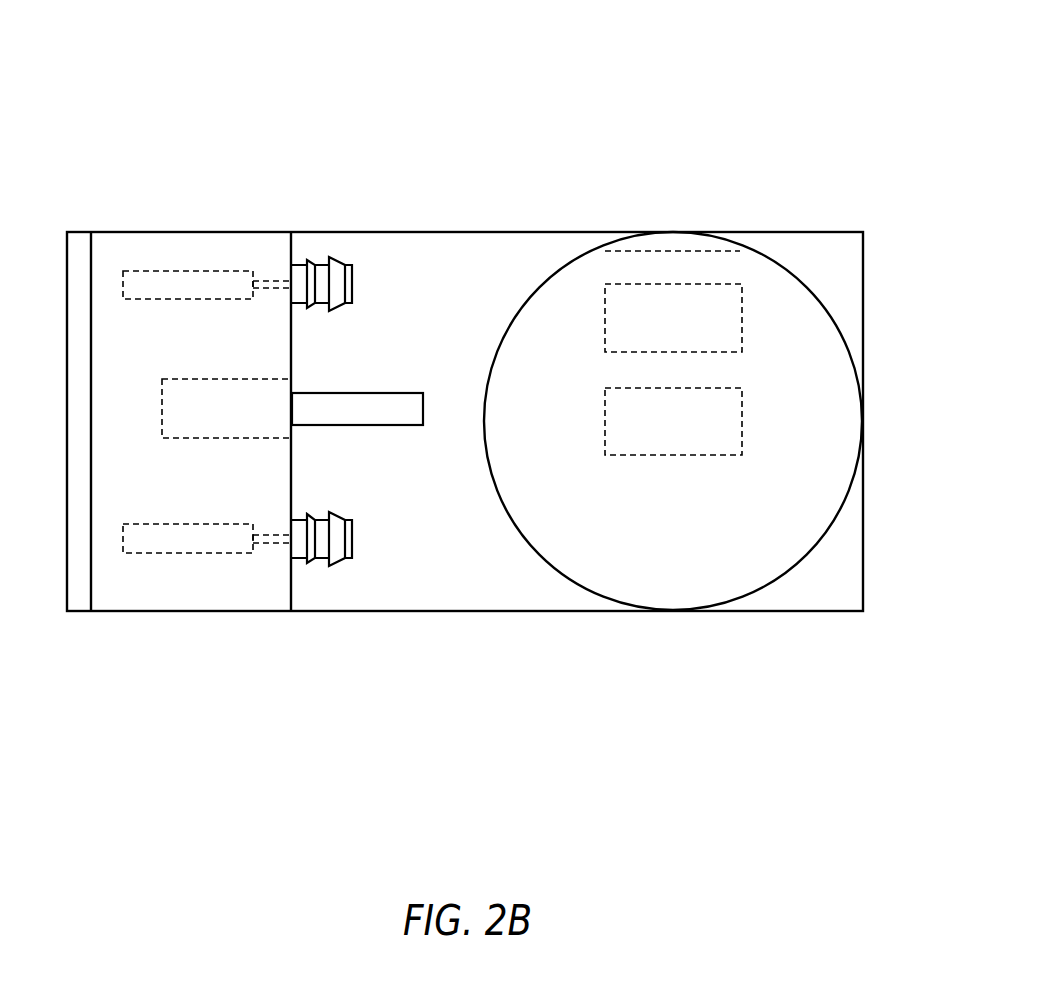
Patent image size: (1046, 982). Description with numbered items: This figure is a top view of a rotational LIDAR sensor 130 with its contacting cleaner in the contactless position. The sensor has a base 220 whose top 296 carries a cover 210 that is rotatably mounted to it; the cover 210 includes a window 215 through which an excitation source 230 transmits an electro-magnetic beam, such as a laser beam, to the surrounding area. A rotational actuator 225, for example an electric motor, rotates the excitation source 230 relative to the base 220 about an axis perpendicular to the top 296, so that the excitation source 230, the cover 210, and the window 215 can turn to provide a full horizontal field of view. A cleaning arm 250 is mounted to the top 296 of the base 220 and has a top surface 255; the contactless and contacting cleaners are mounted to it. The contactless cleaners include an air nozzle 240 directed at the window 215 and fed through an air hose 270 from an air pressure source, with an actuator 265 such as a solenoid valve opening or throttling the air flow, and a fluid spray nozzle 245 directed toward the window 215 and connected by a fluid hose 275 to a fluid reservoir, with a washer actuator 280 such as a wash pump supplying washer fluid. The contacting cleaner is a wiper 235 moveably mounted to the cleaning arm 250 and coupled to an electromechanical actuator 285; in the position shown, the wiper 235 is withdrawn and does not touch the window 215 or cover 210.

The LIDAR sensor 130 is at (583, 73).
The cover 210 is at (783, 266).
The window 215 is at (685, 251).
The base 220 is at (413, 232).
The rotational actuator 225 is at (742, 432).
The excitation source 230 is at (742, 335).
The wiper 235 is at (353, 425).
The air nozzle 240 is at (315, 265).
The fluid spray nozzle 245 is at (320, 562).
The cleaning arm 250 is at (91, 478).
The top surface 255 is at (200, 351).
The actuator 265 is at (167, 271).
The air hose 270 is at (270, 281).
The fluid hose 275 is at (272, 543).
The washer actuator 280 is at (167, 553).
The electromechanical actuator 285 is at (162, 405).
The top 296 is at (450, 564).